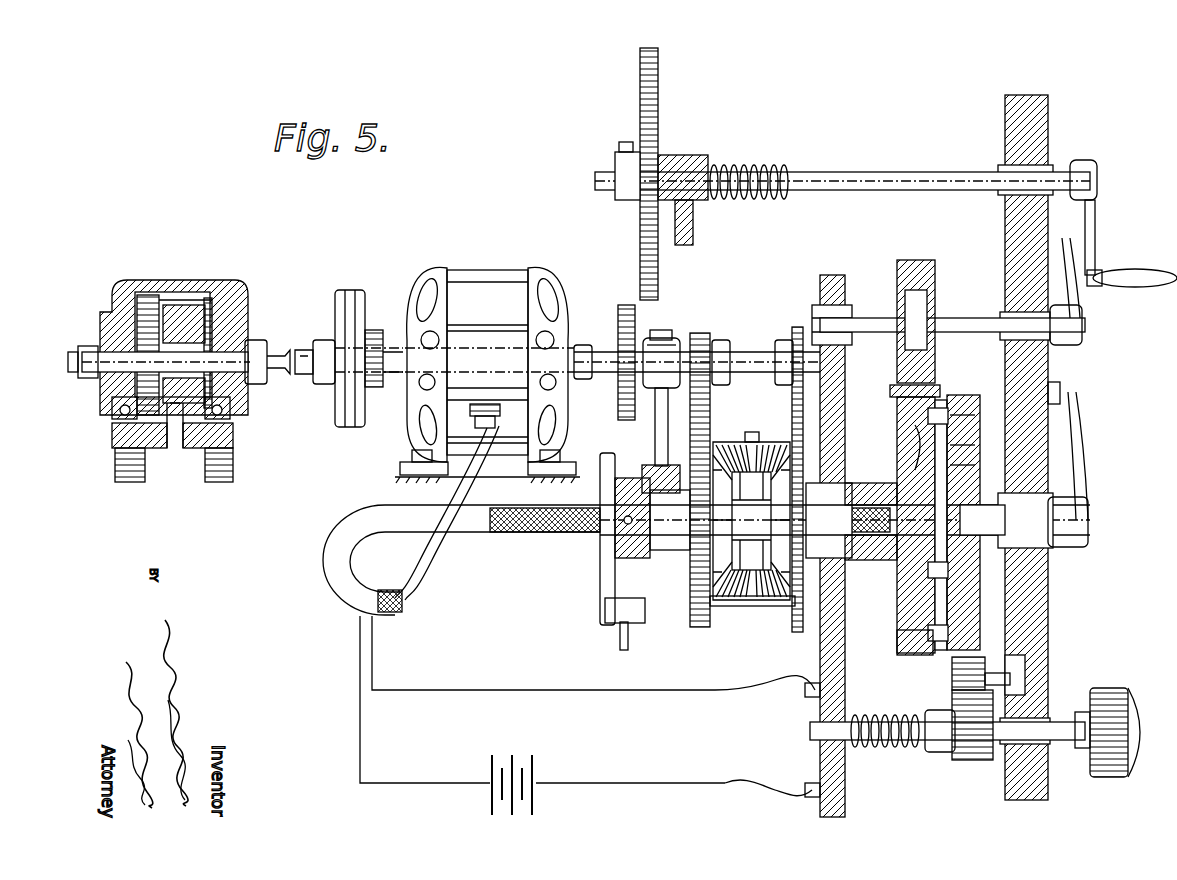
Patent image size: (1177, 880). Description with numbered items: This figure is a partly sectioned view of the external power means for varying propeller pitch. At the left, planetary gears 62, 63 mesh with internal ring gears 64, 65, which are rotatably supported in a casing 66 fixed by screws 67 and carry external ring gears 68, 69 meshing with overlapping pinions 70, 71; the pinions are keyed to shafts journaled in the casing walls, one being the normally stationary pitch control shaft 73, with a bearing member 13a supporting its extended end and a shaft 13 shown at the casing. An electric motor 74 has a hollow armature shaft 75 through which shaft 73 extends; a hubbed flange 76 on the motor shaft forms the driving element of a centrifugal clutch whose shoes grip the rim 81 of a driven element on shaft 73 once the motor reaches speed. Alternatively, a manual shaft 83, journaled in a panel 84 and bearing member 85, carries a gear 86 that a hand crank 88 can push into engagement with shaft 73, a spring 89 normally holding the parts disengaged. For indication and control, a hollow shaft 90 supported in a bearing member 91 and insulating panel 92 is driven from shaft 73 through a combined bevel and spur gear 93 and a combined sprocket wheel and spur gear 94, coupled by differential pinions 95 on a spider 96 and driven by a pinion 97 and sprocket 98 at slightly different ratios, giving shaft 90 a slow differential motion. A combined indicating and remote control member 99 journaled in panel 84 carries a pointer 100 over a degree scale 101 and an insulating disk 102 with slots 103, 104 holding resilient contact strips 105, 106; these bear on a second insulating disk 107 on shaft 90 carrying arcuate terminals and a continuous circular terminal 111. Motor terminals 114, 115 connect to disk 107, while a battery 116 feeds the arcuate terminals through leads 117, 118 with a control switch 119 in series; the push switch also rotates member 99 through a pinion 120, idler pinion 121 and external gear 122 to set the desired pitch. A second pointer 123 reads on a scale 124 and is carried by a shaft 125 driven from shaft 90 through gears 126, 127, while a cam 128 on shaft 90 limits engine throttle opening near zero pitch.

The shaft 13 is at (240, 352).
The bearing 13a is at (660, 345).
The planetary gears 62 is at (145, 466).
The planetary gears 63 is at (233, 466).
The internal ring gear 64 is at (112, 440).
The internal ring gear 65 is at (233, 440).
The casing 66 is at (236, 302).
The screws 67 is at (640, 335).
The external ring gear 68 is at (118, 414).
The external ring gear 69 is at (224, 414).
The pinion 70 is at (148, 296).
The pinion 71 is at (195, 304).
The shaft 73 is at (593, 352).
The electric motor 74 is at (468, 290).
The armature shaft 75 is at (396, 374).
The hubbed flange 76 is at (374, 332).
The rim 81 is at (347, 300).
The shaft 83 is at (880, 180).
The panel 84 is at (998, 235).
The bearing member 85 is at (695, 200).
The gear 86 is at (658, 100).
The hand crank 88 is at (1095, 250).
The spring 89 is at (770, 165).
The hollow shaft 90 is at (675, 552).
The bearing member 91 is at (638, 558).
The insulating panel 92 is at (830, 648).
The combined bevel and spur gear 93 is at (712, 408).
The combined sprocket wheel and spur gear 94 is at (792, 418).
The differential pinions 95 is at (735, 442).
The spider 96 is at (751, 521).
The pinion 97 is at (722, 340).
The sprocket 98 is at (782, 340).
The combined indicating and remote control member 99 is at (991, 388).
The pointer 100 is at (1078, 456).
The scale 101 is at (1060, 392).
The insulating disk 102 is at (975, 448).
The slot 103 is at (975, 468).
The slot 104 is at (950, 590).
The resilient contact strip 105 is at (975, 428).
The resilient contact strip 106 is at (948, 632).
The insulating disk 107 is at (928, 418).
The continuous circular terminal 111 is at (915, 452).
The terminal 114 is at (384, 596).
The terminal 115 is at (388, 605).
The battery 116 is at (538, 768).
The lead 117 is at (358, 683).
The lead 118 is at (642, 688).
The control switch 119 is at (920, 750).
The pinion 120 is at (955, 760).
The idler pinion 121 is at (985, 680).
The external gear 122 is at (952, 660).
The second pointer 123 is at (1068, 318).
The scale 124 is at (1064, 244).
The shaft 125 is at (962, 330).
The gear 126 is at (915, 268).
The gear 127 is at (890, 391).
The cam 128 is at (600, 590).